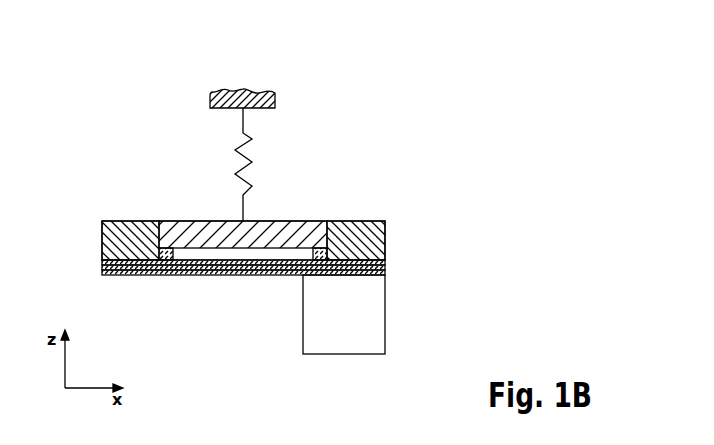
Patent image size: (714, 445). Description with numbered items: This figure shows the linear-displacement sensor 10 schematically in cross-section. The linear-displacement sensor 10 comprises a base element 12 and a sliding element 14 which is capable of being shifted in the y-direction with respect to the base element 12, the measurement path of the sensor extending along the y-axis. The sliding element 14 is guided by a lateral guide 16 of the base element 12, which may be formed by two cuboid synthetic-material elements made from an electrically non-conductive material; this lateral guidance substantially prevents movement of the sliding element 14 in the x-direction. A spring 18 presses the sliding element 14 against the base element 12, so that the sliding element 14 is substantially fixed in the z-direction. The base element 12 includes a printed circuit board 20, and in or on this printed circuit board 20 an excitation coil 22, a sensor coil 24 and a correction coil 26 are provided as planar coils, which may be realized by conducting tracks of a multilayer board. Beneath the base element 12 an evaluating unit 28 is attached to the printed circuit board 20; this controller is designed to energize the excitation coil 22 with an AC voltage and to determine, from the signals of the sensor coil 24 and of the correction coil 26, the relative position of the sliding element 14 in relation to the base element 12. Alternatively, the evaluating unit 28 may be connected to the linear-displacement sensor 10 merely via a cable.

The linear-displacement sensor 10 is at (430, 206).
The base element 12 is at (102, 238).
The sliding element 14 is at (201, 221).
The lateral guide 16 is at (131, 232).
The spring 18 is at (258, 149).
The printed circuit board 20 is at (102, 267).
The excitation coil 22 is at (124, 276).
The sensor coil 24 is at (159, 276).
The correction coil 26 is at (192, 276).
The evaluating unit 28 is at (372, 312).